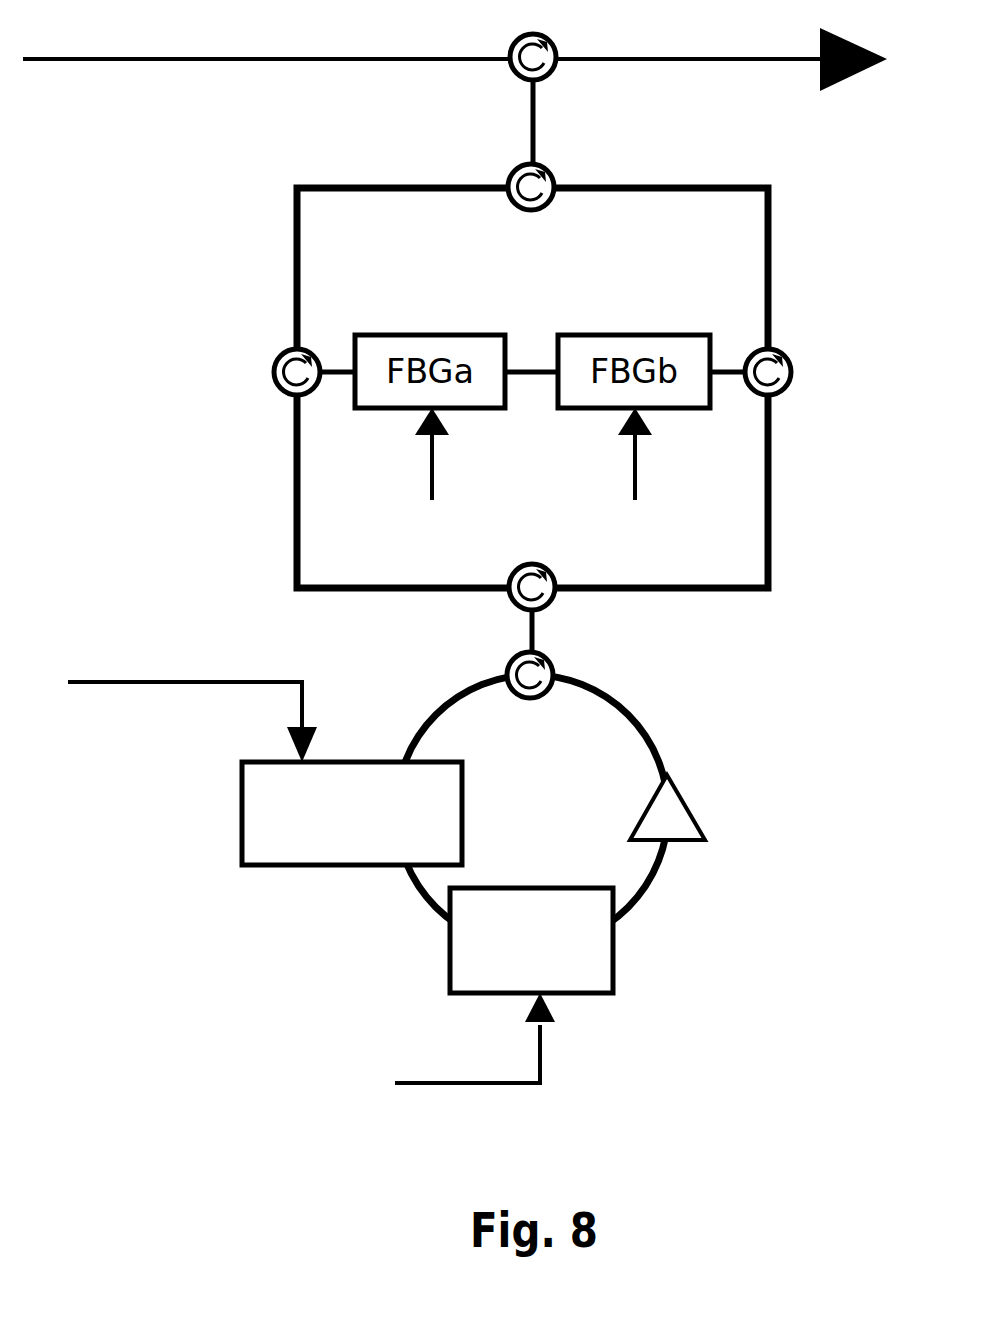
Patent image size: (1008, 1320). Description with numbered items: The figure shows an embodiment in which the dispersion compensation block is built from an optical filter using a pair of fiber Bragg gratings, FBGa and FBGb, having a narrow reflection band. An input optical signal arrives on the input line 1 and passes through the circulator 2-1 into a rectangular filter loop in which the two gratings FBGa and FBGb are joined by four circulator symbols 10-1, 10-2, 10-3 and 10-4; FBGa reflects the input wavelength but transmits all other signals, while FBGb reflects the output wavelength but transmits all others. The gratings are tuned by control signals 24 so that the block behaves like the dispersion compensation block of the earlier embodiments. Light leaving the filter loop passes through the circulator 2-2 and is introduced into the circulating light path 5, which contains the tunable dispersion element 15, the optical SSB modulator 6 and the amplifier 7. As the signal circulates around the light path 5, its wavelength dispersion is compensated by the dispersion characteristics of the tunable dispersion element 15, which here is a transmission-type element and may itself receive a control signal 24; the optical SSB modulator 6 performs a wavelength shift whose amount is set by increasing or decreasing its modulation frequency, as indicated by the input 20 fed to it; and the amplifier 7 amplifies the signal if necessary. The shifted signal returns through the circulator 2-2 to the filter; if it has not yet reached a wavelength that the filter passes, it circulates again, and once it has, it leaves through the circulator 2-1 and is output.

The input optical fiber 1 is at (182, 62).
The circulator 2-1 is at (553, 70).
The circulator 2-2 is at (550, 655).
The optical circulator 10-1 is at (515, 208).
The optical circulator 10-2 is at (270, 365).
The optical circulator 10-3 is at (788, 348).
The optical circulator 10-4 is at (527, 563).
The control signals 24 is at (182, 680).
The light path 5 is at (657, 718).
The amplifier 7 is at (648, 808).
The optical SSB modulator 6 is at (613, 947).
The tunable dispersion element 15 is at (323, 865).
The RF signal input 20 is at (454, 1040).